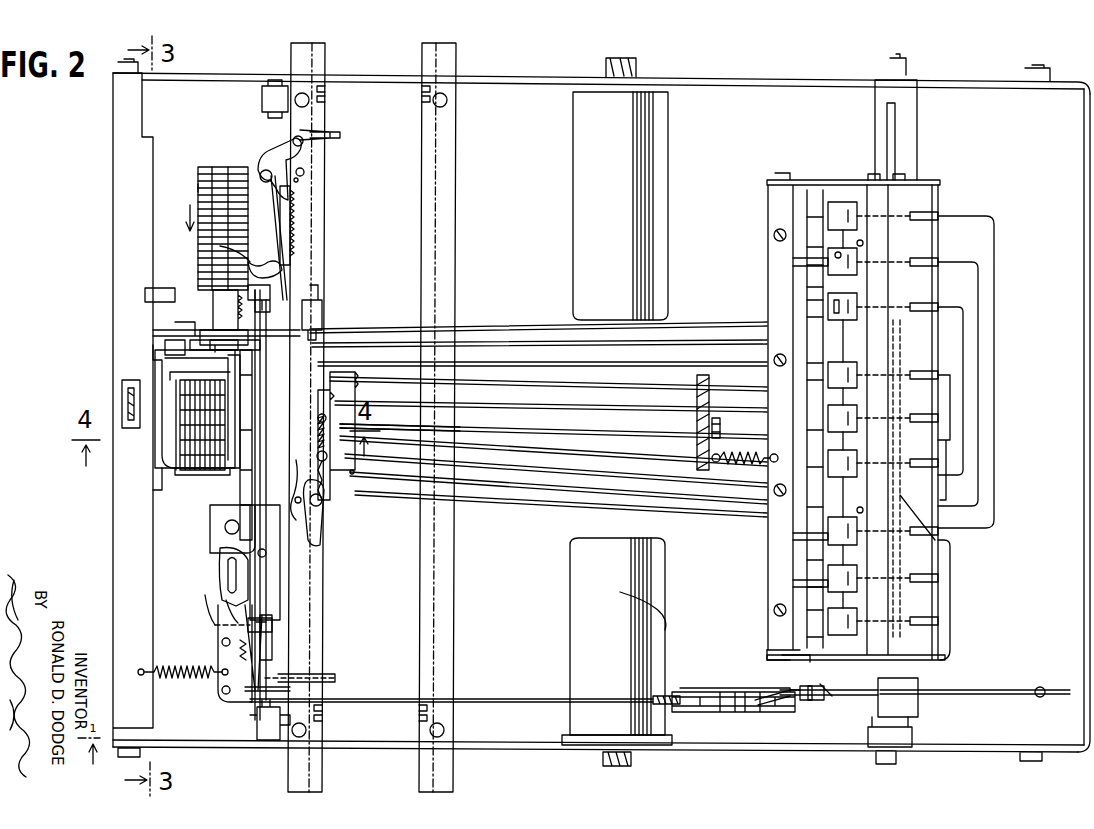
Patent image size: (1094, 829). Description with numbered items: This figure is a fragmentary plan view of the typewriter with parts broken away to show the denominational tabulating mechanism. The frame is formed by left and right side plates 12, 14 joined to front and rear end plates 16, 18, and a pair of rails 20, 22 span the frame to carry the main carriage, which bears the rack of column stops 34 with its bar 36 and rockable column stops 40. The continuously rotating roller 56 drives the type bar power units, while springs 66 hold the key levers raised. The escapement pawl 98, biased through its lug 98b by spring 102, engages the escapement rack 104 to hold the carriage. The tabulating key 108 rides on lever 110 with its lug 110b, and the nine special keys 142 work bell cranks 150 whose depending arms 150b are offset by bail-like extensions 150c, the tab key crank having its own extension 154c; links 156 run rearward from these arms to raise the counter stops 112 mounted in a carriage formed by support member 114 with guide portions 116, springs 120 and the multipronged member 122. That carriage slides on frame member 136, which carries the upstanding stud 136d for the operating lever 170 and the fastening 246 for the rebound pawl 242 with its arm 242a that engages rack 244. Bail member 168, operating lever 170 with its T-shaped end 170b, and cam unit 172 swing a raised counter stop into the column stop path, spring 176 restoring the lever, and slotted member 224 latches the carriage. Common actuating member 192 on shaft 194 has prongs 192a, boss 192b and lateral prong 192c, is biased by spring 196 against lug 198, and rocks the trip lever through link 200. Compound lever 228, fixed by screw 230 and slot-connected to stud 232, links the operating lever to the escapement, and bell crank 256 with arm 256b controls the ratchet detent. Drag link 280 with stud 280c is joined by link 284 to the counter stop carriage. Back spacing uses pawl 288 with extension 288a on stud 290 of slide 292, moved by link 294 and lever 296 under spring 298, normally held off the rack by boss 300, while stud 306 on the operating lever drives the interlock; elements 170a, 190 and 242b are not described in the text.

The left side plate 12 is at (392, 750).
The right side plate 14 is at (515, 77).
The front end plate 16 is at (1092, 198).
The rear end plate 18 is at (113, 201).
The rail 20 is at (437, 116).
The rear rail 22 is at (323, 66).
The rack of column stops 34 is at (192, 173).
The bar 36 is at (232, 166).
The column stop 40 is at (198, 192).
The electric-motor-driven roller 56 is at (575, 120).
The spring 66 is at (1041, 686).
The pawl 98 is at (320, 518).
The lug 98b is at (300, 502).
The spring 102 is at (322, 468).
The escapement rack 104 is at (445, 374).
The tabulating key 108 is at (920, 708).
The lever 110 is at (972, 692).
The lug 110b is at (818, 702).
The counter stop 112 is at (212, 408).
The support member 114 is at (322, 304).
The guide portions 116 is at (320, 360).
The springs 120 is at (178, 428).
The multipronged member 122 is at (182, 453).
The frame member 136 is at (320, 318).
The upstanding stud / second lateral extension 136d is at (300, 198).
The special keys 142 is at (828, 260).
The bell crank 150 is at (958, 573).
The depending arm 150b is at (940, 328).
The bail-like extension 150c is at (930, 440).
The bail-like extension 154c is at (950, 624).
The link 156 is at (725, 343).
The bail member 168 is at (232, 382).
The operating lever 170 is at (238, 488).
The carriage frame lower arm 170a is at (178, 468).
The T-shaped end 170b is at (135, 378).
The cam unit 172 is at (714, 674).
The spring 176 is at (172, 678).
The drive rod 190 is at (490, 698).
The common power unit actuating member 192 is at (775, 578).
The prongs 192a is at (815, 583).
The boss 192b is at (780, 446).
The laterally extending prong 192c is at (822, 696).
The shaft 194 is at (775, 663).
The spring 196 is at (755, 460).
The lug 198 is at (710, 456).
The connecting link 200 is at (772, 702).
The slotted member 224 is at (240, 344).
The compound lever 228 is at (222, 582).
The screw fastening 230 is at (316, 288).
The stud 232 is at (230, 563).
The toothed pawl 242 is at (238, 298).
The arm 242a is at (290, 270).
The ratchet stop 242b is at (160, 287).
The fixed rack 244 is at (238, 316).
The stud-like fastening 246 is at (220, 249).
The bell crank 256 is at (245, 670).
The horizontally extending arm 256b is at (335, 674).
The drag link 280 is at (290, 573).
The rearwardly extending stud 280c is at (252, 623).
The link 284 is at (212, 600).
The pawl 288 is at (438, 423).
The extension 288a is at (440, 352).
The stud 290 is at (334, 468).
The slide 292 is at (342, 376).
The link 294 is at (280, 226).
The lever 296 is at (282, 138).
The spring 298 is at (293, 210).
The boss 300 is at (440, 395).
The stud 306 is at (160, 326).